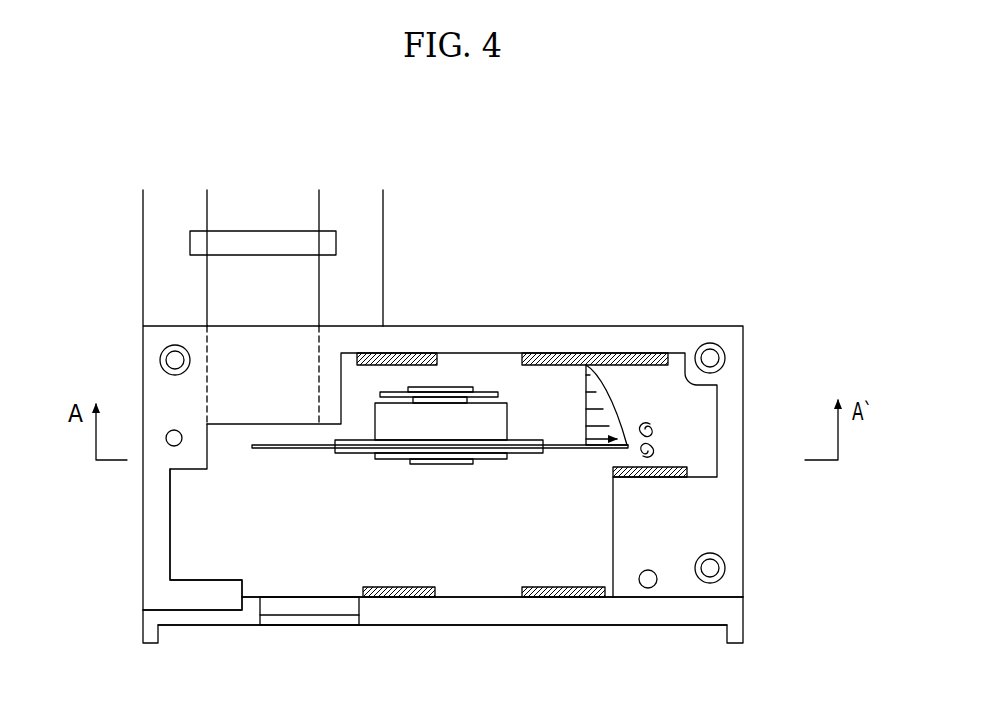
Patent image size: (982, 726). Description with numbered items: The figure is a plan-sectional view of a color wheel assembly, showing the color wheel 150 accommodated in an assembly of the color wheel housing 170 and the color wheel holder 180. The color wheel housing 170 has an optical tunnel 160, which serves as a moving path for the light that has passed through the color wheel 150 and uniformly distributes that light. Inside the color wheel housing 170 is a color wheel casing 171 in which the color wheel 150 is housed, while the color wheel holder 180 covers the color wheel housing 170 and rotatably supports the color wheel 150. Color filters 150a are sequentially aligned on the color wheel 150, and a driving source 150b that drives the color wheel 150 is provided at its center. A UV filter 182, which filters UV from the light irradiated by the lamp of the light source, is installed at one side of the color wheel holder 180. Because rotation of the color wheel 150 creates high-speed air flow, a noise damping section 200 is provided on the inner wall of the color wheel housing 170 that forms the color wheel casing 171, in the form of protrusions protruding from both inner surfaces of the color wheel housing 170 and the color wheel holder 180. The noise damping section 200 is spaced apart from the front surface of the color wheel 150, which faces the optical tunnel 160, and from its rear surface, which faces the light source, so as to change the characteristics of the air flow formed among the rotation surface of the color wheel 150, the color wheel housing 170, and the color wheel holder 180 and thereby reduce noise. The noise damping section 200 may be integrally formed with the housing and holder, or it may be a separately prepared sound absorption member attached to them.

The color wheel 150 is at (440, 468).
The color filters 150a is at (298, 450).
The driving source 150b is at (413, 428).
The optical tunnel 160 is at (372, 279).
The color wheel housing 170 is at (128, 517).
The color wheel casing 171 is at (187, 563).
The color wheel holder 180 is at (560, 628).
The UV filter 182 is at (320, 627).
The noise damping section 200 is at (437, 368).